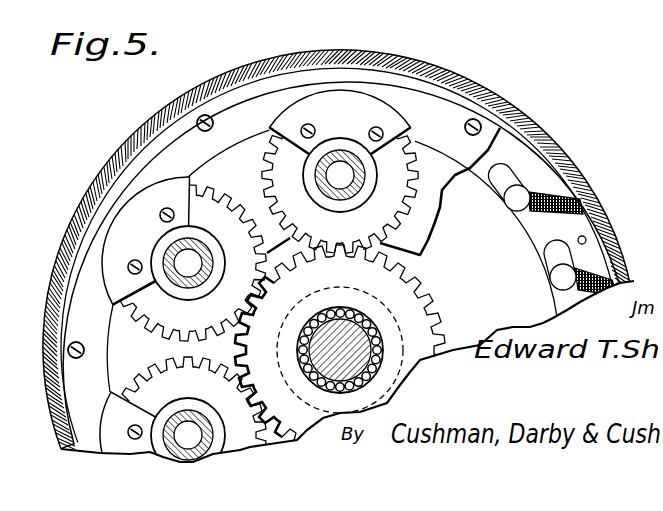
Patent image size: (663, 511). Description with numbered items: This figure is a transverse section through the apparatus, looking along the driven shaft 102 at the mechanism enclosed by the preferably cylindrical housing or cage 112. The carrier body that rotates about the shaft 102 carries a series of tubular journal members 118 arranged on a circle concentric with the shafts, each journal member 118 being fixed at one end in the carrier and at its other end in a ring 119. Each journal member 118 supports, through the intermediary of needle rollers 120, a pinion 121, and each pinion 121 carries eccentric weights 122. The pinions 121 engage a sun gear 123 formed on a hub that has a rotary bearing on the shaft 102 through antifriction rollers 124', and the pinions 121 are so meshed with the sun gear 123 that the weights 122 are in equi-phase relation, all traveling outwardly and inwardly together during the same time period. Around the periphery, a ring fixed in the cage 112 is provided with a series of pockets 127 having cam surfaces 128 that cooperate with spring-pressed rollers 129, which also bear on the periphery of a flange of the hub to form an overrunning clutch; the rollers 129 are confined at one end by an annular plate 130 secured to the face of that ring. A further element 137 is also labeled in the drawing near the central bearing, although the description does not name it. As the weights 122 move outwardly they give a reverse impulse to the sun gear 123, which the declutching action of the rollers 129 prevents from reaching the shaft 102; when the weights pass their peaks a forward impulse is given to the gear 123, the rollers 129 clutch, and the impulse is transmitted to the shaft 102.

The shaft 102 is at (318, 378).
The housing or cage 112 is at (452, 79).
The tubular journal member 118 is at (333, 156).
The ring 119 is at (420, 240).
The needle rollers 120 is at (587, 240).
The pinion 121 is at (401, 160).
The eccentric weights 122 is at (344, 88).
The sun gear 123 is at (392, 284).
The antifriction rollers 124' is at (382, 350).
The pockets 127 is at (503, 173).
The cam surfaces 128 is at (516, 177).
The spring-pressed rollers 129 is at (514, 201).
The annular plate 130 is at (476, 166).
The ball bearing 137 is at (324, 312).